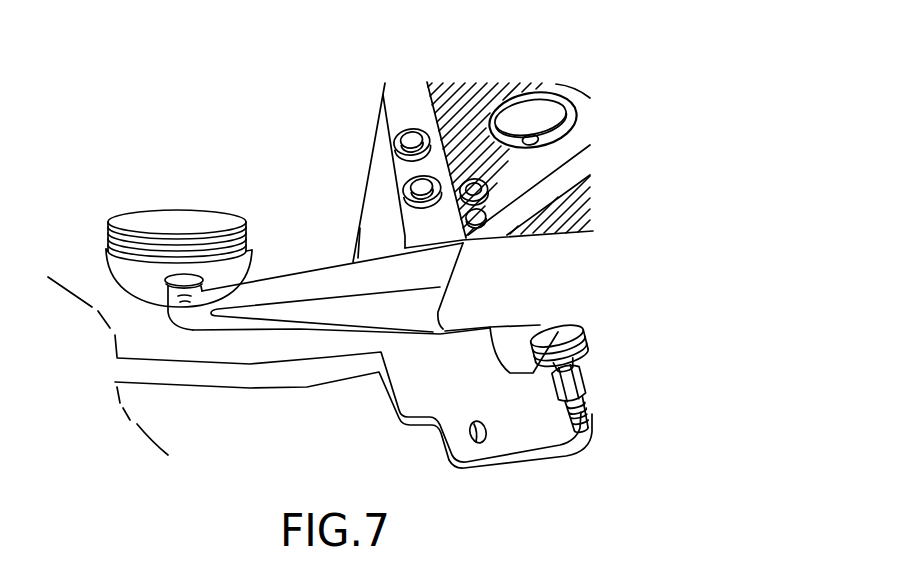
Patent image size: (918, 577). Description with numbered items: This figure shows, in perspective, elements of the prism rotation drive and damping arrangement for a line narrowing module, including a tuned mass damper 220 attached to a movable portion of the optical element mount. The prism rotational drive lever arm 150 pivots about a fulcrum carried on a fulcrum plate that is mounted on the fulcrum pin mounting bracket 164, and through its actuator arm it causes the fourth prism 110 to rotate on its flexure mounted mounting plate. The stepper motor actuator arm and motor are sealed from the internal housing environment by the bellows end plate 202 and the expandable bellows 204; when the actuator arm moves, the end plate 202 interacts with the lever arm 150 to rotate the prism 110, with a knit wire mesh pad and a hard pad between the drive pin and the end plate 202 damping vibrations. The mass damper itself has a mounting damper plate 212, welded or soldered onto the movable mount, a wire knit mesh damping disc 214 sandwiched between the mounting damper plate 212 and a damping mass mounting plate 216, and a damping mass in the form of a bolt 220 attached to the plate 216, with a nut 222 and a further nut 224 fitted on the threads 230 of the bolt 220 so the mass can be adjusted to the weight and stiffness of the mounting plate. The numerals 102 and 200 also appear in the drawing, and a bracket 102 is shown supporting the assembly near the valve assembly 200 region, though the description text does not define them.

The bracket 102 is at (568, 441).
The fourth prism 110 is at (447, 317).
The prism rotational drive lever arm 150 is at (285, 318).
The fulcrum pin mounting bracket 164 is at (421, 128).
The valve assembly 200 is at (220, 184).
The bellows end plate 202 is at (248, 260).
The bellows 204 is at (178, 212).
The mounting damper plate 212 is at (557, 336).
The wire knit mesh damping disc 214 is at (560, 350).
The damping mass mounting plate 216 is at (527, 377).
The tuned mass damper bolt 220 is at (627, 381).
The nut 222 is at (564, 366).
The nut 224 is at (569, 383).
The threads 230 is at (578, 416).